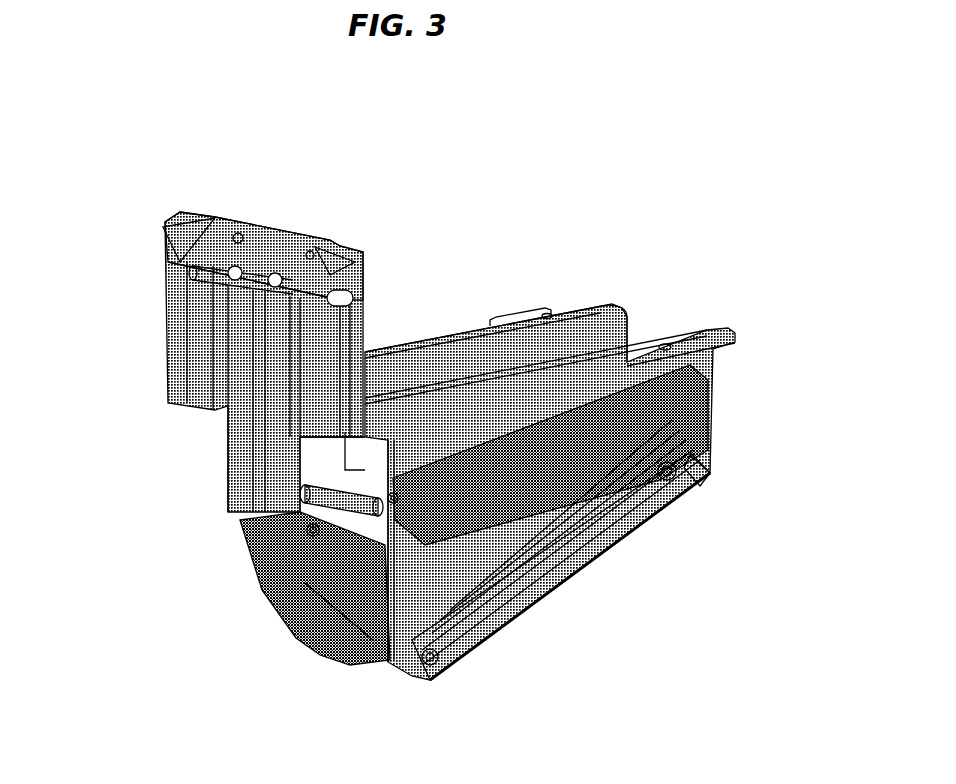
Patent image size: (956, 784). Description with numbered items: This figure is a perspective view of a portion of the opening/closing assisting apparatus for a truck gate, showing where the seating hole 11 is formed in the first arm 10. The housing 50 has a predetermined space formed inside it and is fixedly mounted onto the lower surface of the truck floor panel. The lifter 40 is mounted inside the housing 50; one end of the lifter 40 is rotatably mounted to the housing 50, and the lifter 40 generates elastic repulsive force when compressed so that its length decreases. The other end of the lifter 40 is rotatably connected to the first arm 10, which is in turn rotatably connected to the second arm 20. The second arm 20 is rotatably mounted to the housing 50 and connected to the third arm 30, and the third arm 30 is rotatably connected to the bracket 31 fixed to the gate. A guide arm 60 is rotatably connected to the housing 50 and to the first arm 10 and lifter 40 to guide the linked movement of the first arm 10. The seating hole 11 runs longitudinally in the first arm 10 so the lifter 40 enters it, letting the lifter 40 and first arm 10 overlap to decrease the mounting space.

The first arm 10 is at (667, 507).
The seating hole 11 is at (574, 410).
The second arm 20 is at (297, 608).
The third arm 30 is at (243, 443).
The bracket 31 is at (293, 228).
The lifter 40 is at (455, 462).
The housing 50 is at (583, 537).
The guide arm 60 is at (712, 472).